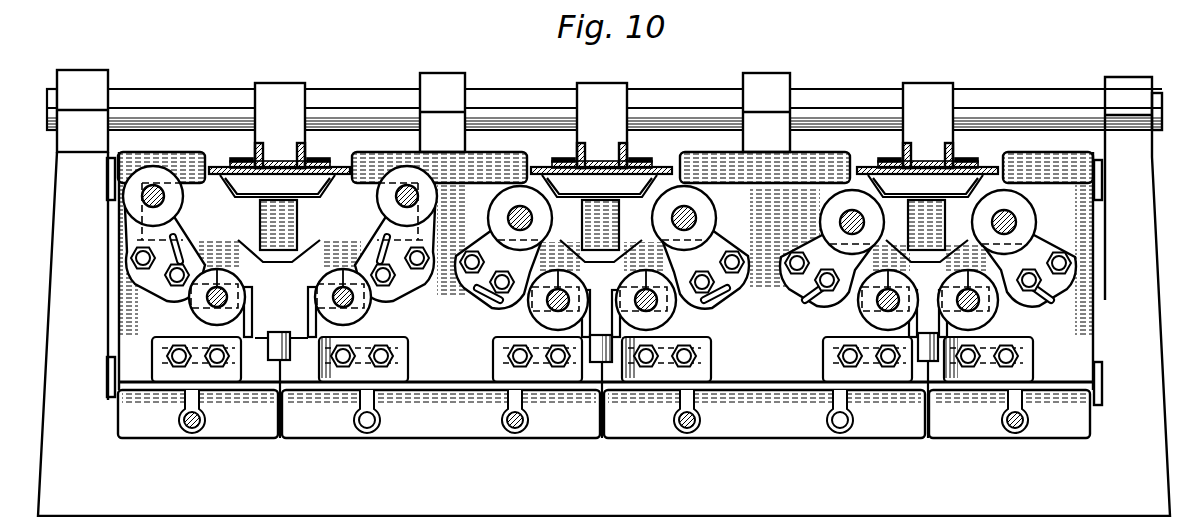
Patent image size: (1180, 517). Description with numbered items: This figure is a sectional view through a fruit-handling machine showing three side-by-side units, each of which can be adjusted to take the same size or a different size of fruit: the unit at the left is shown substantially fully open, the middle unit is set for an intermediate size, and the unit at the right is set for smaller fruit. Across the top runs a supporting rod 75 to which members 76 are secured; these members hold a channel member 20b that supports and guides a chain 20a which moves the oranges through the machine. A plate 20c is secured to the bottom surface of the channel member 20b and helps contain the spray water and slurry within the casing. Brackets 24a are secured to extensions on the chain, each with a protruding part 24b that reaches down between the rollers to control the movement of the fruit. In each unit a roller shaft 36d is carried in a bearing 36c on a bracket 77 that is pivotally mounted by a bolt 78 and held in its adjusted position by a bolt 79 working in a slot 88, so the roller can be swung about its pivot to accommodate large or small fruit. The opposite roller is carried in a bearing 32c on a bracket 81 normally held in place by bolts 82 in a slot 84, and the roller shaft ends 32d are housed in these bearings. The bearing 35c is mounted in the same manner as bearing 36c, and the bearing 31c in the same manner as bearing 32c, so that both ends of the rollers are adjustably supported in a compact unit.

The supporting rod 75 is at (365, 97).
The members 76 is at (272, 90).
The chain 20a is at (233, 167).
The channel member 20b is at (293, 147).
The plate 20c is at (308, 180).
The brackets 24a is at (638, 203).
The protruding part 24b is at (260, 258).
The bearing 31c is at (380, 300).
The bearing 32c is at (151, 311).
The roller shaft end 32d is at (203, 300).
The bearing 35c is at (388, 210).
The bearing 36c is at (96, 198).
The roller shaft 36d is at (145, 192).
The bracket 77 is at (180, 222).
The bolt 78 is at (128, 258).
The bolt 79 is at (167, 280).
The bracket 81 is at (232, 337).
The bolts 82 is at (168, 353).
The slot 84 is at (193, 362).
The slot 88 is at (182, 248).